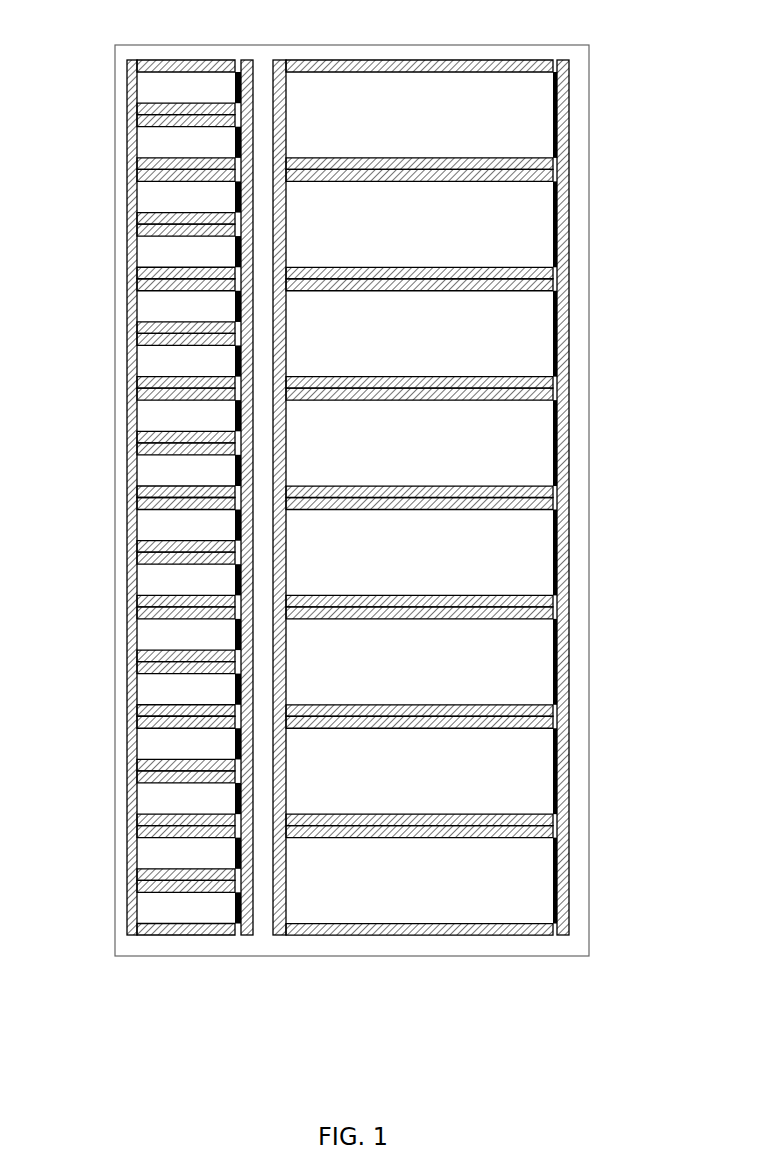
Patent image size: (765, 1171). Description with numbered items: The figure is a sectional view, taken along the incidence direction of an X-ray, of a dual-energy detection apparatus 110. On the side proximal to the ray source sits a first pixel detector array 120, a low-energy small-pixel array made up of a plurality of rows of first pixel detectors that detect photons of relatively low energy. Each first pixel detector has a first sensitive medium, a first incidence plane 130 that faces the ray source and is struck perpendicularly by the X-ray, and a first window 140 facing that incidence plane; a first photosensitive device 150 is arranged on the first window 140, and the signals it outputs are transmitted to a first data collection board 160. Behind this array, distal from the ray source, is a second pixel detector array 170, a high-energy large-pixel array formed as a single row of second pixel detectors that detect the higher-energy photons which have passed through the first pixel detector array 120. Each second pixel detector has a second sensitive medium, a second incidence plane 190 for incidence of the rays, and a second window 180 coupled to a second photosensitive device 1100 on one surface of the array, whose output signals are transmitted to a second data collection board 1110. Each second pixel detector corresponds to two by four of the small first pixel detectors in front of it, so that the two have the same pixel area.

The dual-energy detection apparatus 110 is at (590, 243).
The first pixel detector array 120 is at (140, 183).
The first incidence plane 130 is at (128, 742).
The first window 140 is at (250, 936).
The first photosensitive device 150 is at (235, 87).
The first data collection board 160 is at (235, 310).
The second pixel detector array 170 is at (537, 400).
The second window 180 is at (568, 657).
The second incidence plane 190 is at (273, 85).
The second data collection board 1110 is at (568, 774).
The second photosensitive device 1100 is at (568, 888).